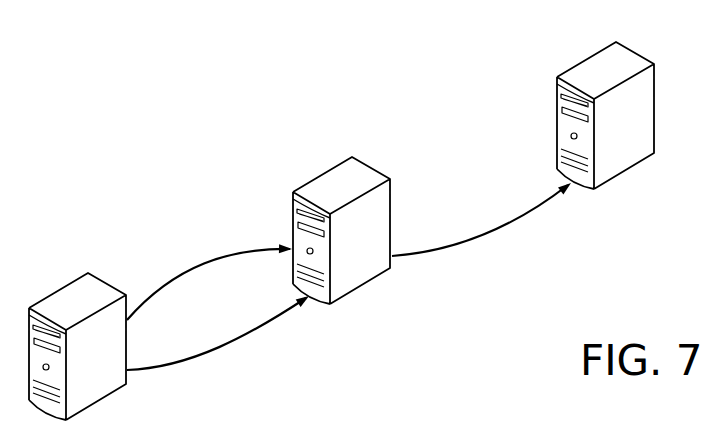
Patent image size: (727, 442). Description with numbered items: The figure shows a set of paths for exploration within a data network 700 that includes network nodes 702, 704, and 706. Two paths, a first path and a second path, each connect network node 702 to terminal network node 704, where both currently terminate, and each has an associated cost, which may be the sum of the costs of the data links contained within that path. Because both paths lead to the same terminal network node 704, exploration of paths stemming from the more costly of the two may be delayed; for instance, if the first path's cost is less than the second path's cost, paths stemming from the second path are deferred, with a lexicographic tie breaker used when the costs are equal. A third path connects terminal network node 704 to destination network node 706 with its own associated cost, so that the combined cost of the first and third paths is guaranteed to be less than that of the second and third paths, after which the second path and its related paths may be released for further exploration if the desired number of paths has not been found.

The data network 700 is at (192, 101).
The network node 702 is at (78, 298).
The terminal network node 704 is at (342, 182).
The destination network node 706 is at (605, 73).